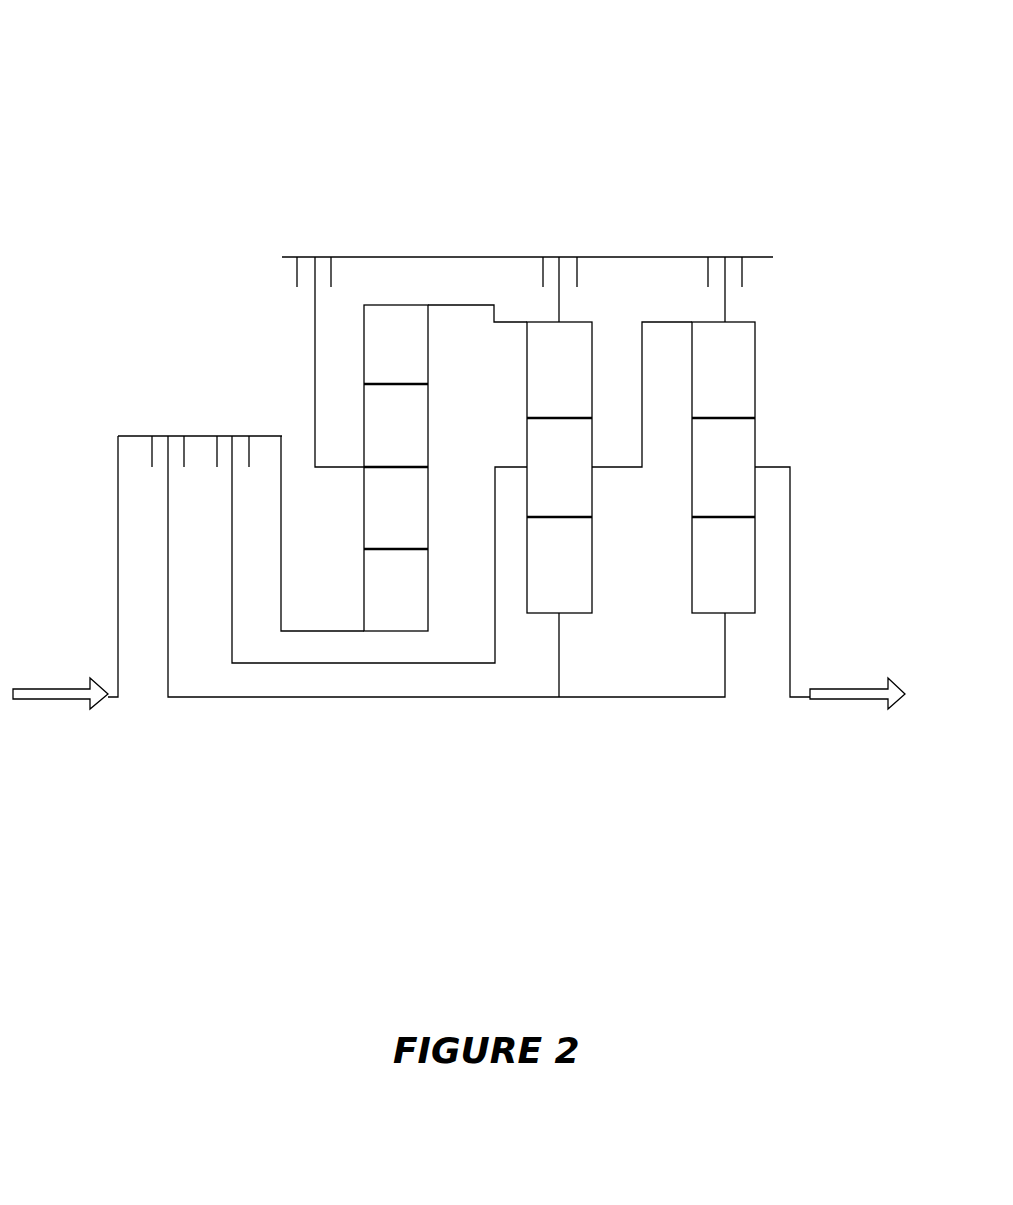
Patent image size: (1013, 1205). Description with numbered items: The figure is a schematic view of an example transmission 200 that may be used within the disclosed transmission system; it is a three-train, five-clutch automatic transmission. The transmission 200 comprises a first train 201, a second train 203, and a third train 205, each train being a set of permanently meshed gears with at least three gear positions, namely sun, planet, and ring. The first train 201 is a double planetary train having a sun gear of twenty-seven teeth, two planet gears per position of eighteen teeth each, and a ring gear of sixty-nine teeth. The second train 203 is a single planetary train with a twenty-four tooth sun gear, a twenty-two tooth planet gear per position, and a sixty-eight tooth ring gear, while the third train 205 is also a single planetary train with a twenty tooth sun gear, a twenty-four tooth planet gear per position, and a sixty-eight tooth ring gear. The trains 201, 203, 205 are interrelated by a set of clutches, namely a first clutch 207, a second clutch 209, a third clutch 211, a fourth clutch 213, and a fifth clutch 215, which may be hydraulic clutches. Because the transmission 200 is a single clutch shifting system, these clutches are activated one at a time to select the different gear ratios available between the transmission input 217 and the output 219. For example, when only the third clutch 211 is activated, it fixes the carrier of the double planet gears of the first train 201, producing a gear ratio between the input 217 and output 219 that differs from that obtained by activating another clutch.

The transmission 200 is at (148, 80).
The first train 201 is at (395, 633).
The second train 203 is at (547, 620).
The third train 205 is at (708, 622).
The first clutch 207 is at (152, 421).
The second clutch 209 is at (245, 421).
The third clutch 211 is at (361, 244).
The fourth clutch 213 is at (550, 244).
The fifth clutch 215 is at (711, 244).
The transmission input 217 is at (60, 688).
The transmission output 219 is at (853, 688).